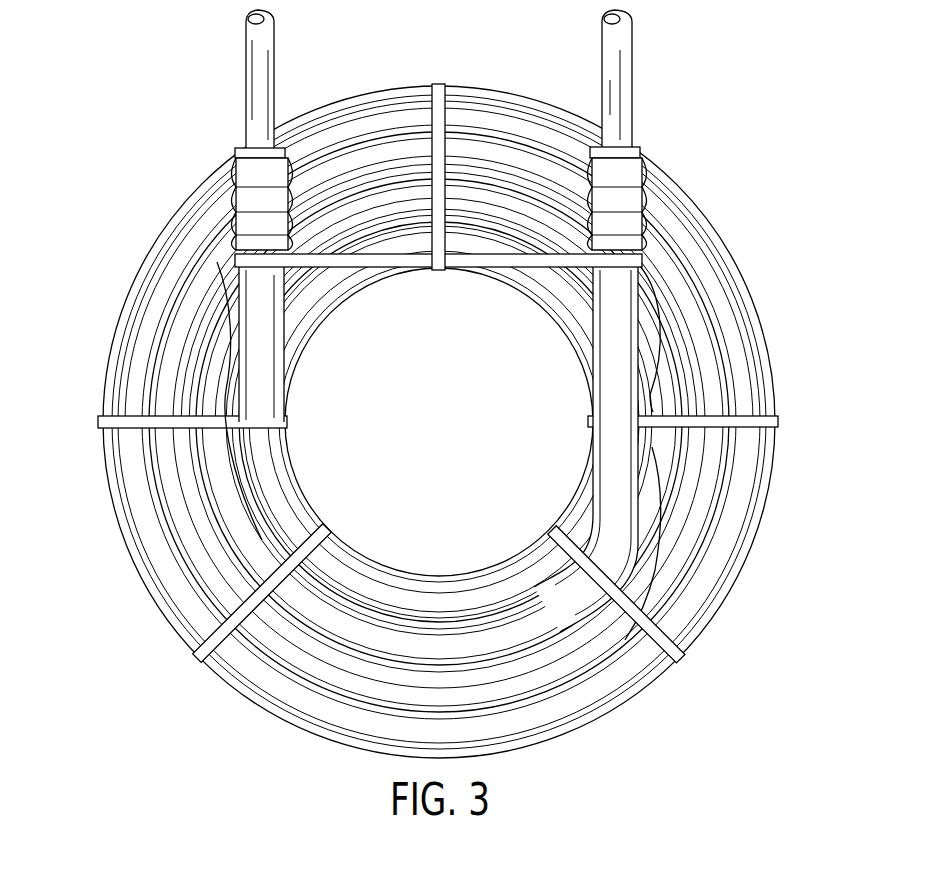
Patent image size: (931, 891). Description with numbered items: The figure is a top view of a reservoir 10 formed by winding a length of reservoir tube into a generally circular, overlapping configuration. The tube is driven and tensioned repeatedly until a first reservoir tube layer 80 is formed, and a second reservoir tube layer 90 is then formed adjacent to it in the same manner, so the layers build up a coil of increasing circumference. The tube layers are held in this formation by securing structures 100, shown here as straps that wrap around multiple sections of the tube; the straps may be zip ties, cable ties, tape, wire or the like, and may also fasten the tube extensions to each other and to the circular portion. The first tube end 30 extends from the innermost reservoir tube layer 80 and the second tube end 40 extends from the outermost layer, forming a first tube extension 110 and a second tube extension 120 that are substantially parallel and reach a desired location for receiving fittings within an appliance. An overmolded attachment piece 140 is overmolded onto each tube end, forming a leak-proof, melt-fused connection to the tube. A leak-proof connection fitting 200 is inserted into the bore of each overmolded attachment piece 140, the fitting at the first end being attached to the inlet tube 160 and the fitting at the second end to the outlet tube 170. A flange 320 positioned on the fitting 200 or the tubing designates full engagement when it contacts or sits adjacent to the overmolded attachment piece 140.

The reservoir 10 is at (686, 752).
The first tube end 30 is at (238, 250).
The second tube end 40 is at (647, 249).
The first reservoir tube layer 80 is at (580, 320).
The second reservoir tube layer 90 is at (663, 455).
The securing structure 100 is at (442, 374).
The first tube extension 110 is at (224, 388).
The second tube extension 120 is at (651, 414).
The overmolded attachment piece 140 is at (628, 195).
The inlet tube 160 is at (246, 83).
The outlet tube 170 is at (630, 65).
The leak-proof connection fitting 200 is at (632, 152).
The flange 320 is at (236, 152).